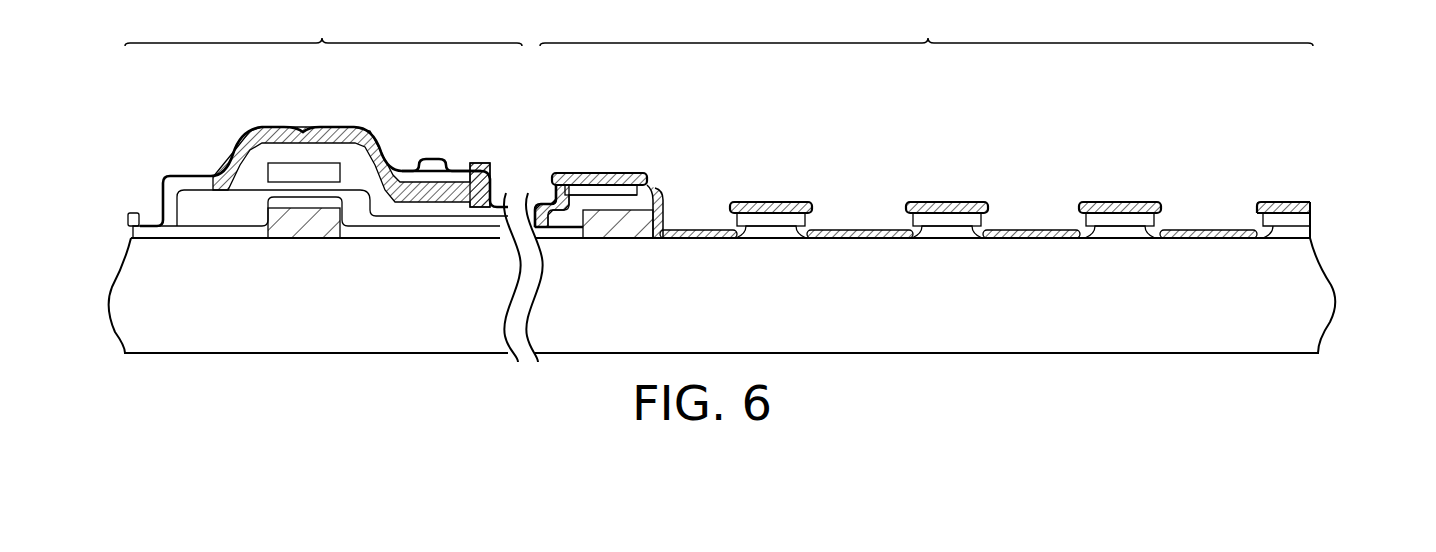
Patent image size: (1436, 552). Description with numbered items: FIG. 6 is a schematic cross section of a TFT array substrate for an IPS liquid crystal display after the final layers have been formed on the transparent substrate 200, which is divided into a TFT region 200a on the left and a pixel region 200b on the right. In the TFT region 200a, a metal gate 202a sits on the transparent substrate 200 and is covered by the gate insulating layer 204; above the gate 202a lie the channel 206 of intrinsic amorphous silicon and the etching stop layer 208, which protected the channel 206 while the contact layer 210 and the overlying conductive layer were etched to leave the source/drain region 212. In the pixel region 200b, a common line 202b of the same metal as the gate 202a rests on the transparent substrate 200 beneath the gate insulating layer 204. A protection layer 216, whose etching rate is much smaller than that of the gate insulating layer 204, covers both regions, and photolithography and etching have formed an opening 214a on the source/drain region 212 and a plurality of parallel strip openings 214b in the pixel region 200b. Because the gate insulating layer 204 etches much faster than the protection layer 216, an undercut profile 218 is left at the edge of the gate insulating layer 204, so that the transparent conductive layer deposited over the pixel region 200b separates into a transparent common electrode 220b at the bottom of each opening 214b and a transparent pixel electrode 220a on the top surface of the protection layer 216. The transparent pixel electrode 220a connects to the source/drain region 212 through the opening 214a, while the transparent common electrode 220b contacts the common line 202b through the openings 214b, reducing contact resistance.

The transparent substrate 200 is at (1303, 309).
The TFT region 200a is at (323, 24).
The pixel region 200b is at (926, 24).
The gate 202a is at (175, 191).
The common line 202b is at (620, 208).
The gate insulating layer 204 is at (148, 233).
The channel 206 is at (530, 200).
The etching stop layer 208 is at (320, 165).
The contact layer 210 is at (495, 188).
The source/drain region 212 is at (218, 178).
The opening 214a is at (450, 159).
The openings 214b is at (912, 220).
The protection layer 216 is at (305, 132).
The undercut profile 218 is at (728, 224).
The transparent pixel electrode 220a is at (593, 173).
The transparent common electrode 220b is at (1208, 230).